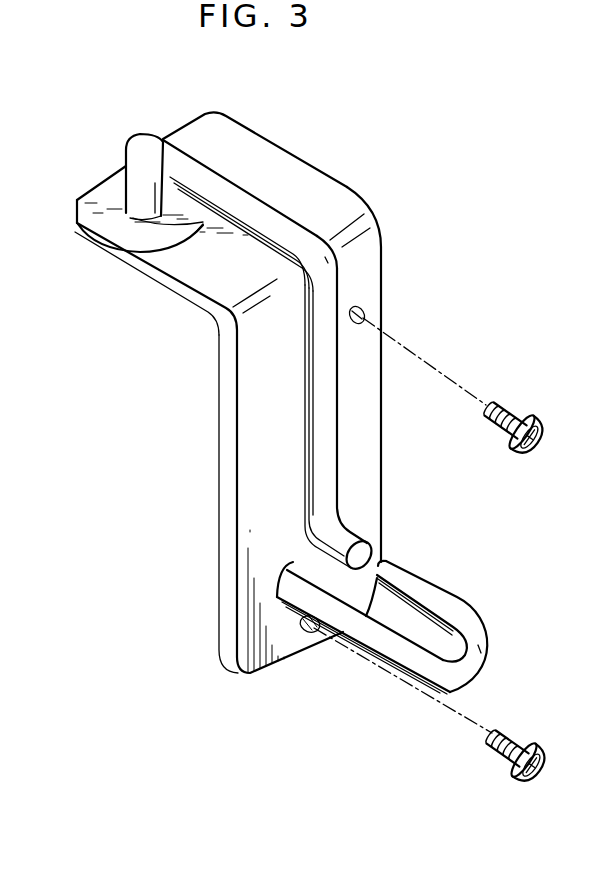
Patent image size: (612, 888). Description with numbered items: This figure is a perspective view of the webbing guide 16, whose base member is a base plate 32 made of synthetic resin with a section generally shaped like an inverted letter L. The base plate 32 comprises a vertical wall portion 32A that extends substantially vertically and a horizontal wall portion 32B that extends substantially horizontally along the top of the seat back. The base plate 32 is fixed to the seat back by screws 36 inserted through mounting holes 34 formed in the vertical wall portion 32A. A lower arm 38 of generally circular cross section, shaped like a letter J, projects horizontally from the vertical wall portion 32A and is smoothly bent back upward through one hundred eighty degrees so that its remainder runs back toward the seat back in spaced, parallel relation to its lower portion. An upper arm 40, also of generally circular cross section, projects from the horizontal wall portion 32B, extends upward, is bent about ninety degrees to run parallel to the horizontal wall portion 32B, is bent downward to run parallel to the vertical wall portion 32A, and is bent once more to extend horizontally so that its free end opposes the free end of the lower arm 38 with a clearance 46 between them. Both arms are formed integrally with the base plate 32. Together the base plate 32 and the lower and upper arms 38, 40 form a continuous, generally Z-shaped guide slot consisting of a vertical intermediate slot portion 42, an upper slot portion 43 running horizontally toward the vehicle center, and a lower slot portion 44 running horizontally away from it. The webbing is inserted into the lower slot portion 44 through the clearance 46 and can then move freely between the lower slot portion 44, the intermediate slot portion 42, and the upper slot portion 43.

The webbing guide 16 is at (390, 194).
The base plate 32 is at (282, 146).
The vertical wall portion 32A is at (252, 442).
The horizontal wall portion 32B is at (192, 270).
The mounting holes 34 is at (367, 313).
The screws 36 is at (543, 423).
The lower arm 38 is at (470, 665).
The upper arm 40 is at (287, 228).
The intermediate slot portion 42 is at (296, 353).
The upper slot portion 43 is at (112, 252).
The lower slot portion 44 is at (412, 622).
The clearance 46 is at (385, 556).